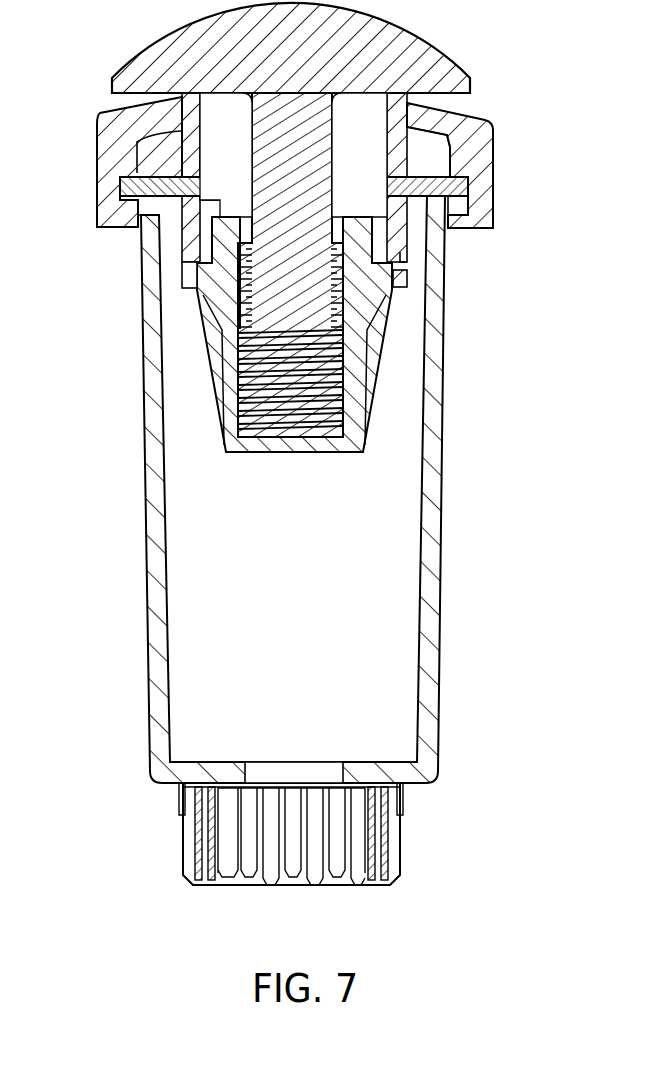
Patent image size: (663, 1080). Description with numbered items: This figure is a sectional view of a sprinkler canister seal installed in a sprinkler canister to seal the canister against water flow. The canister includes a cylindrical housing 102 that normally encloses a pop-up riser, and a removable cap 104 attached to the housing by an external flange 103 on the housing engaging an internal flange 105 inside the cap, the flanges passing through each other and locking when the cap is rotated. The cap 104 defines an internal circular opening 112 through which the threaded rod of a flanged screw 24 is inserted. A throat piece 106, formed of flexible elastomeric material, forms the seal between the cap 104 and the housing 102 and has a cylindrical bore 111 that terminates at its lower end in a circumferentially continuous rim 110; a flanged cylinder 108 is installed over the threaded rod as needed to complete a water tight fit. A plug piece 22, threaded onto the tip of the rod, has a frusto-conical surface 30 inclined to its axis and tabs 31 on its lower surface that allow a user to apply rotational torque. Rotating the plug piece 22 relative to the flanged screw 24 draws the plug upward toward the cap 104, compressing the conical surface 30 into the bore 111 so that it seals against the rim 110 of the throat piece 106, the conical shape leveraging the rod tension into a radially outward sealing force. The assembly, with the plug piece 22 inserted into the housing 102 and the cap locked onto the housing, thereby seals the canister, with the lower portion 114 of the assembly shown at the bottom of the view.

The flanged screw 24 is at (423, 37).
The internal circular opening 112 is at (410, 100).
The removable cap 104 is at (490, 125).
The flanged cylinder 108 is at (185, 152).
The frusto-conical surface 30 is at (223, 237).
The cylindrical bore 111 is at (383, 222).
The external flange 103 is at (455, 203).
The internal flange 105 is at (457, 222).
The throat piece 106 is at (400, 252).
The circumferentially continuous rim 110 is at (187, 265).
The plug piece 22 is at (400, 280).
The tabs 31 is at (197, 325).
The cylindrical housing 102 is at (432, 570).
The splined base 114 is at (370, 863).